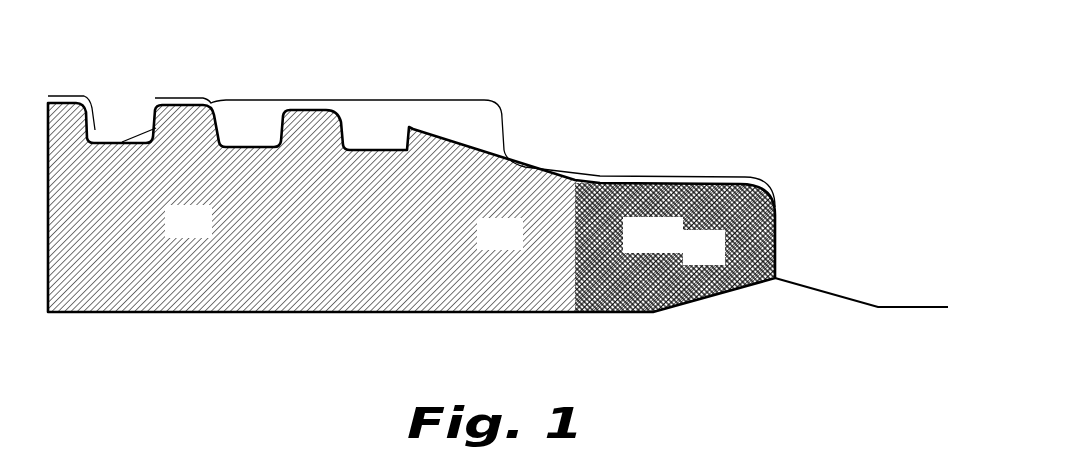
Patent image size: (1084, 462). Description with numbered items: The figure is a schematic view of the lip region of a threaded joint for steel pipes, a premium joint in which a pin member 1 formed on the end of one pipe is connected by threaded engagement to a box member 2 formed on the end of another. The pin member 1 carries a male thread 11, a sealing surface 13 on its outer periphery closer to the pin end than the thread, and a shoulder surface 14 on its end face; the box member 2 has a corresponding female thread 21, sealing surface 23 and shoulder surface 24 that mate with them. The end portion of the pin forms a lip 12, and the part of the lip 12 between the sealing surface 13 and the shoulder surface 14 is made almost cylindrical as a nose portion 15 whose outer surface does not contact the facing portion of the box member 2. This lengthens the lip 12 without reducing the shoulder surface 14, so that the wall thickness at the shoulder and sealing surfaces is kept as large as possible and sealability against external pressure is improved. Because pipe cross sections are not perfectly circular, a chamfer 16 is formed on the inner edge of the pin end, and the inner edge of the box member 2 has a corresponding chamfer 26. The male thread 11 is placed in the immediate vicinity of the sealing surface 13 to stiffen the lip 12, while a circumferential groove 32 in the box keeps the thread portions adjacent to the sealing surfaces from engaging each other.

The pin member 1 is at (197, 309).
The box member 2 is at (742, 103).
The male thread 11 is at (184, 122).
The lip 12 is at (494, 287).
The sealing surface 13 is at (532, 174).
The shoulder surface 14 is at (704, 248).
The nose portion 15 is at (675, 247).
The chamfer 16 is at (697, 288).
The female thread 21 is at (123, 117).
The sealing surface 23 is at (545, 166).
The shoulder surface 24 is at (825, 246).
The chamfer 26 is at (833, 297).
The circumferential groove 32 is at (382, 123).